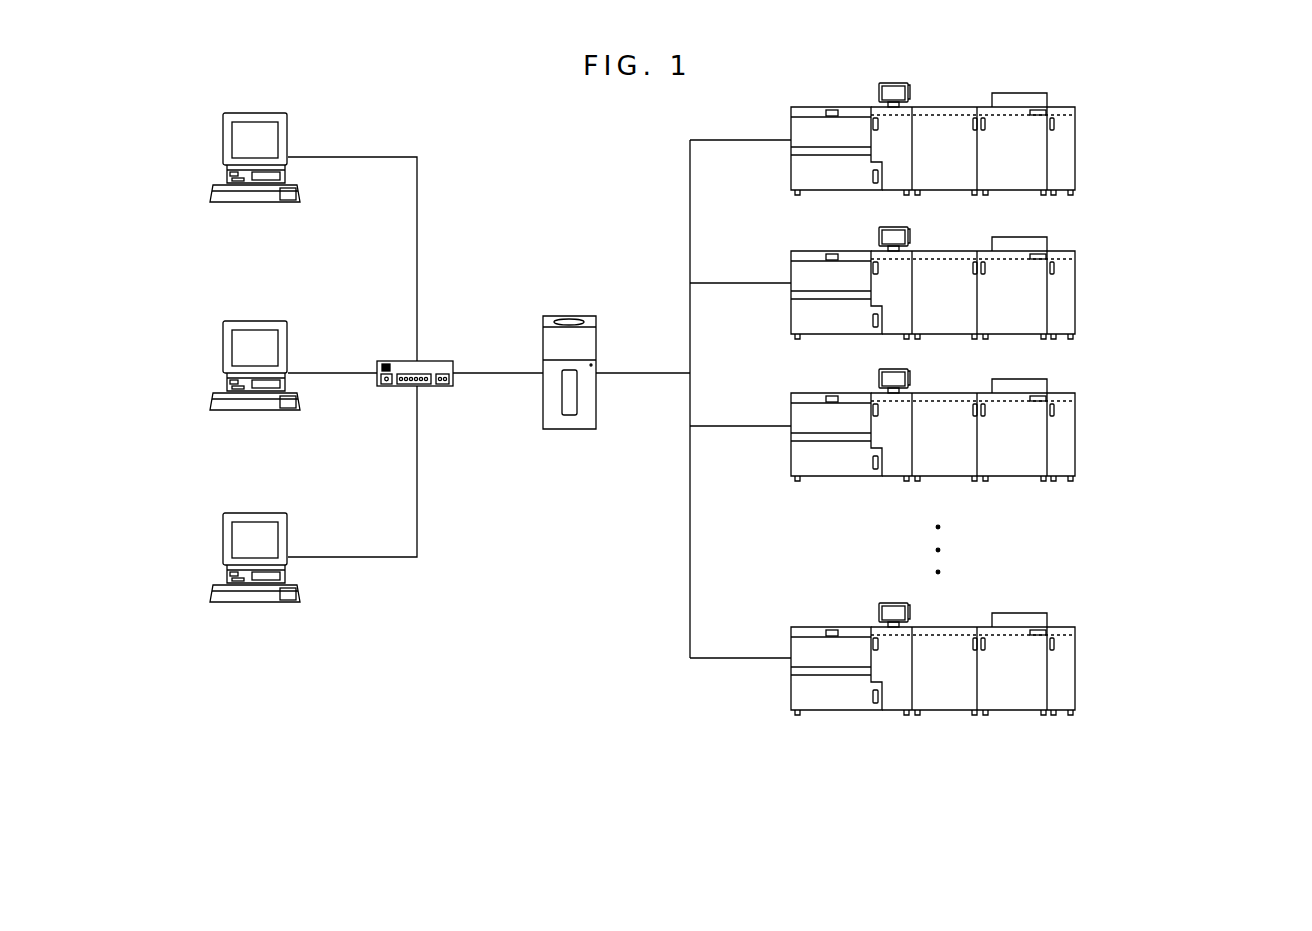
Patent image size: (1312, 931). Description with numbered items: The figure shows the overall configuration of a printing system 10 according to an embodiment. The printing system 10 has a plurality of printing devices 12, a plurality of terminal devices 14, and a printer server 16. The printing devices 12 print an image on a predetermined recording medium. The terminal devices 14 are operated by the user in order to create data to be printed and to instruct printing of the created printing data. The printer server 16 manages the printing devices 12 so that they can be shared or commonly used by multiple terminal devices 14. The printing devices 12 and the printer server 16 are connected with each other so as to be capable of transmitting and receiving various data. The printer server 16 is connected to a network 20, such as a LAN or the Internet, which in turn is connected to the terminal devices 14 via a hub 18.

The printing system 10 is at (500, 773).
The printing device 12 is at (1063, 77).
The terminal device 14 is at (282, 108).
The printer server 16 is at (553, 314).
The hub 18 is at (430, 361).
The network 20 is at (417, 229).